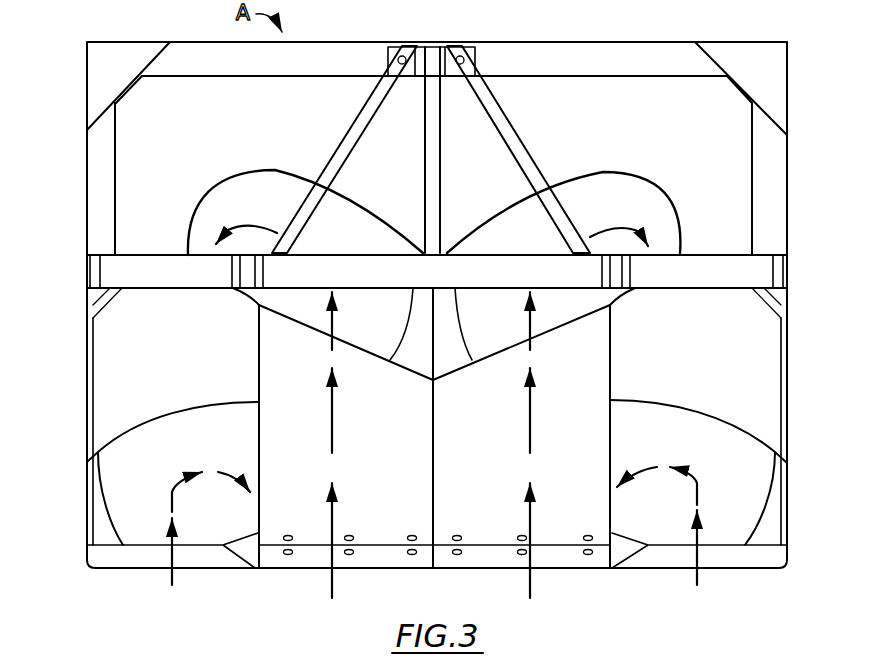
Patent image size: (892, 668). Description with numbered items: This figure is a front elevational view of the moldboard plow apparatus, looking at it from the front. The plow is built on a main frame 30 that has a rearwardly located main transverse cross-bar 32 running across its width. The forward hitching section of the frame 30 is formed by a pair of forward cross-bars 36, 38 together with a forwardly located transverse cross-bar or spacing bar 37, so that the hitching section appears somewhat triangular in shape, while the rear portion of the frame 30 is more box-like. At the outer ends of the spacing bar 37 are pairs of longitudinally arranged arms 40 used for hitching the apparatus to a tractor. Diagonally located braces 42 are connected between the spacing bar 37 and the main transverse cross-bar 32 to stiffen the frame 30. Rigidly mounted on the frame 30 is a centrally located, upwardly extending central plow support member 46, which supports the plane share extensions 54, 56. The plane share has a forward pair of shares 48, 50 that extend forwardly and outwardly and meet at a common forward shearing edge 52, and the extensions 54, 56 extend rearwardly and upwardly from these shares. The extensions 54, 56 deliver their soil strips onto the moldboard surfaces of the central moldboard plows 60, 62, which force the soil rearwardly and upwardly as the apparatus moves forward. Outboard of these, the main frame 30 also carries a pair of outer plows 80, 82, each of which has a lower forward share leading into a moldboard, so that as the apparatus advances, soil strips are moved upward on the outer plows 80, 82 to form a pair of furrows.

The main frame 30 is at (660, 42).
The main transverse cross-bar 32 is at (345, 60).
The forward cross-bar 36 is at (530, 163).
The spacing bar 37 is at (397, 275).
The forward cross-bar 38 is at (335, 160).
The longitudinally arranged arms 40 is at (420, 46).
The diagonal braces 42 is at (120, 270).
The central plow support member 46 is at (440, 195).
The forward share 48 is at (503, 555).
The forward share 50 is at (380, 556).
The common forward shearing edge 52 is at (458, 568).
The plane share extension 54 is at (555, 525).
The plane share extension 56 is at (312, 537).
The moldboard plow 60 is at (652, 185).
The moldboard plow 62 is at (222, 185).
The outer plow 80 is at (723, 415).
The outer plow 82 is at (148, 418).